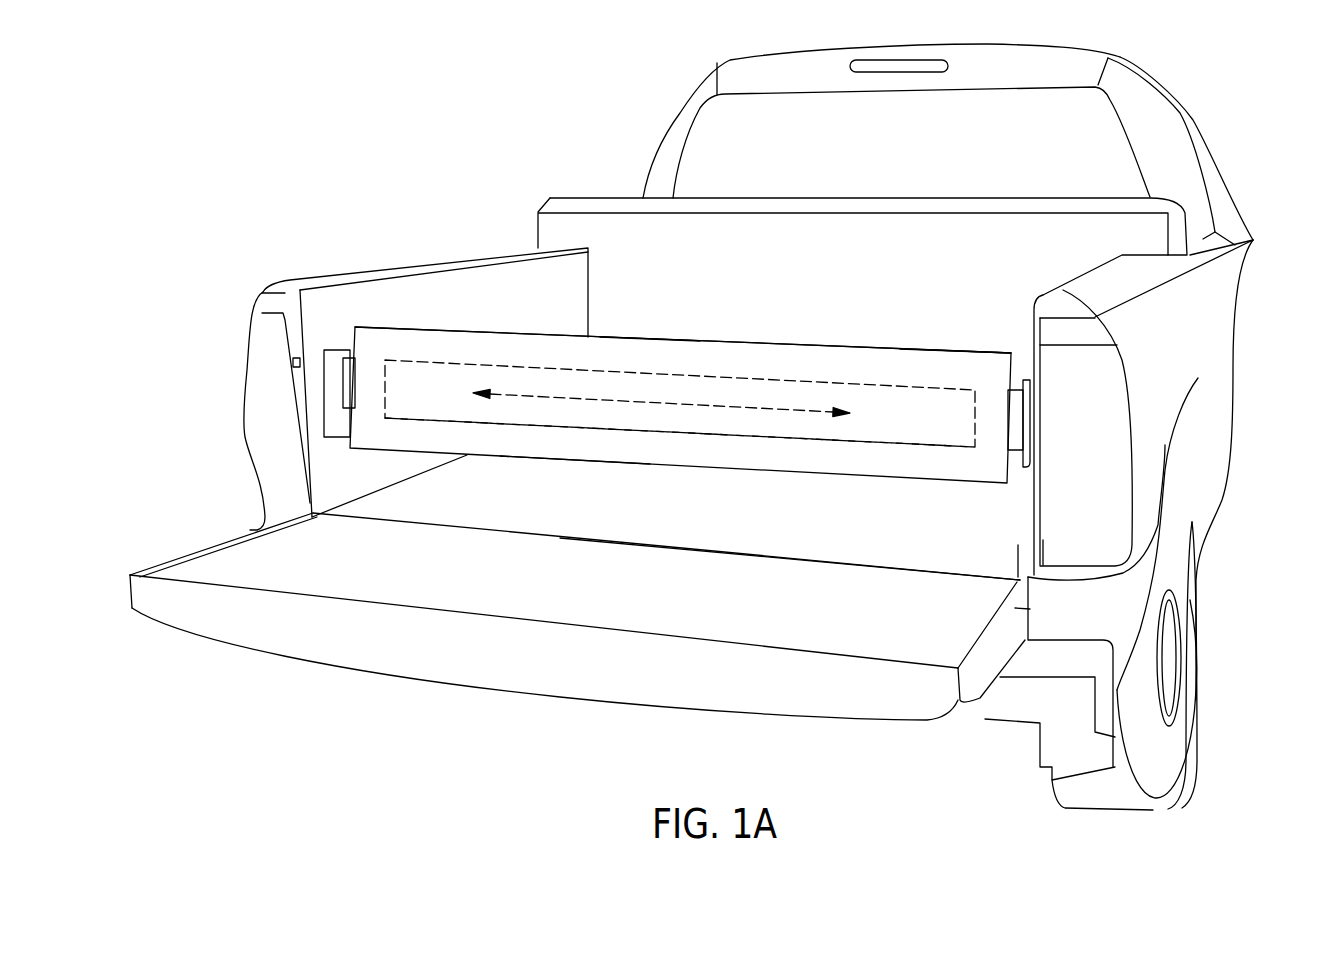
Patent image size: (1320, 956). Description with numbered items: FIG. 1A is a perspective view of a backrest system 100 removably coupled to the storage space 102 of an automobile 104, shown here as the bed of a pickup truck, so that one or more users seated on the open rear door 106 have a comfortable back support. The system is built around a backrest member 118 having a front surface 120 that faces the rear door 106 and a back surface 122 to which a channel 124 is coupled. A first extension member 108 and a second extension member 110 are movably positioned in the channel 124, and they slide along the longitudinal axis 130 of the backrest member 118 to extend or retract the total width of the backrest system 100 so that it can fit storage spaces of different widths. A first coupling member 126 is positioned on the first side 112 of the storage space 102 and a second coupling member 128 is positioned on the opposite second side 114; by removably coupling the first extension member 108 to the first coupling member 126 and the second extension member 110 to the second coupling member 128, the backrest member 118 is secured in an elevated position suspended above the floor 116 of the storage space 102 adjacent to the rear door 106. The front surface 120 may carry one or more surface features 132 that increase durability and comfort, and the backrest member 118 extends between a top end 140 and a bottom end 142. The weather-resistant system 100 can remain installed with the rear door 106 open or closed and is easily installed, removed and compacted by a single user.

The backrest system 100 is at (691, 348).
The storage space 102 is at (1013, 563).
The automobile 104 is at (1265, 150).
The rear door 106 is at (233, 540).
The first extension member 108 is at (1077, 380).
The second extension member 110 is at (294, 366).
The first side 112 is at (1128, 333).
The second side 114 is at (480, 297).
The floor 116 is at (773, 530).
The backrest member 118 is at (800, 342).
The front surface 120 is at (680, 399).
The back surface 122 is at (937, 350).
The channel 124 is at (757, 436).
The first coupling member 126 is at (1027, 422).
The second coupling member 128 is at (320, 408).
The longitudinal axis 130 is at (497, 394).
The surface features 132 is at (493, 354).
The top end 140 is at (623, 333).
The bottom end 142 is at (583, 463).